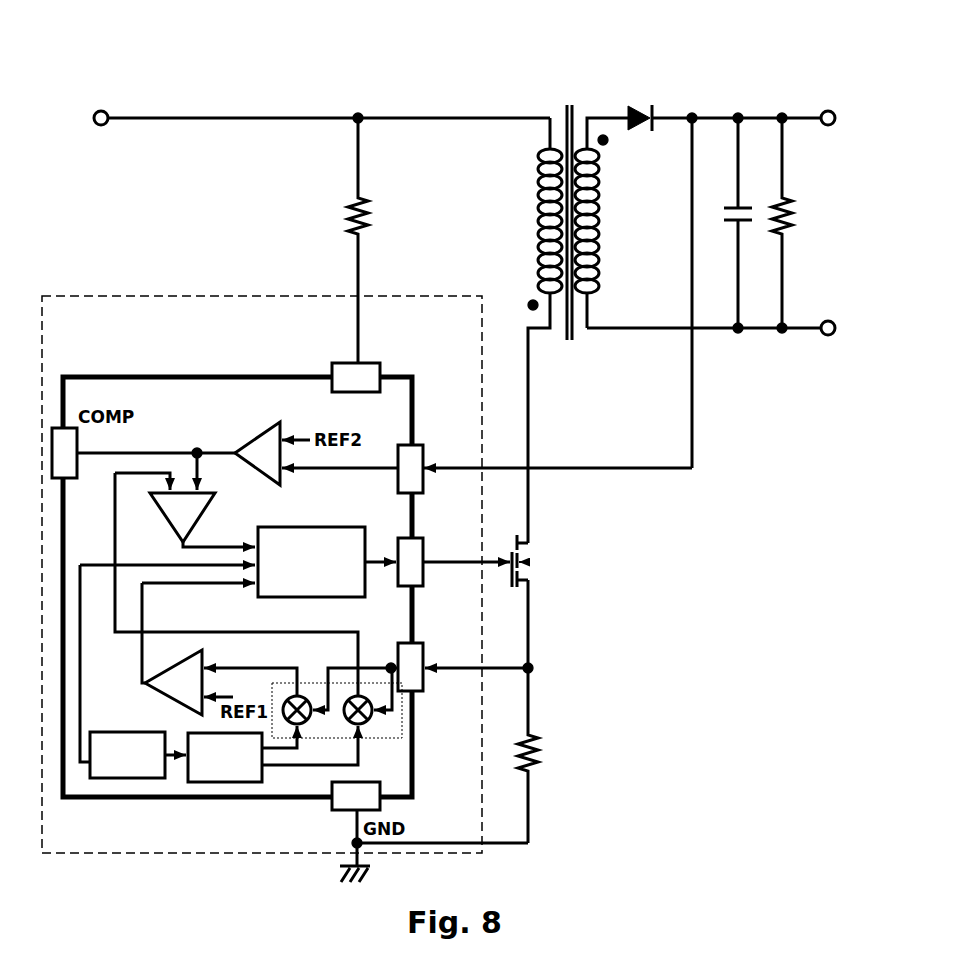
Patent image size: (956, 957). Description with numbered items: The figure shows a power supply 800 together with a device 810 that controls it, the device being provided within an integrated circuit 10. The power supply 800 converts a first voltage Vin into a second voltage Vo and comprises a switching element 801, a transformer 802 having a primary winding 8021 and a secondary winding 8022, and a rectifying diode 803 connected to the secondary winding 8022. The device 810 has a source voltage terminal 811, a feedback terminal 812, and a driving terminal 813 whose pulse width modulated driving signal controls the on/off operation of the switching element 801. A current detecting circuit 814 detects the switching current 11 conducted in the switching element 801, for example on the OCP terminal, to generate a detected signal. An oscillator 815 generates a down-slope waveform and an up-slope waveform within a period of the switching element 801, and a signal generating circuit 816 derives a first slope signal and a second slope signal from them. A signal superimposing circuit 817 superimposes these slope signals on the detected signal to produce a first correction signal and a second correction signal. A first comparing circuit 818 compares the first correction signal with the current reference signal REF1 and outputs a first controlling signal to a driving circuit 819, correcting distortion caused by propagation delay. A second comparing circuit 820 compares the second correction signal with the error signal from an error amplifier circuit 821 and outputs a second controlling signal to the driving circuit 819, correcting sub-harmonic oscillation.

The power supply 800 is at (232, 93).
The integrated circuit 10 is at (155, 296).
The device for controlling the power supply 810 is at (145, 376).
The primary winding 8021 is at (505, 199).
The transformer 802 is at (555, 91).
The secondary winding 8022 is at (602, 197).
The rectifying diode 803 is at (640, 101).
The source voltage terminal 811 is at (382, 372).
The feedback terminal 812 is at (424, 447).
The driving terminal 813 is at (424, 540).
The current detecting circuit 814 is at (424, 645).
The switching element 801 is at (542, 557).
The current I1 11 is at (479, 659).
The error amplifier circuit 821 is at (256, 437).
The second comparing circuit 820 is at (165, 525).
The driving circuit 819 is at (312, 527).
The first comparing circuit 818 is at (158, 688).
The oscillator 815 is at (125, 782).
The signal generating circuit 816 is at (222, 784).
The signal superimposing circuit 817 is at (404, 740).